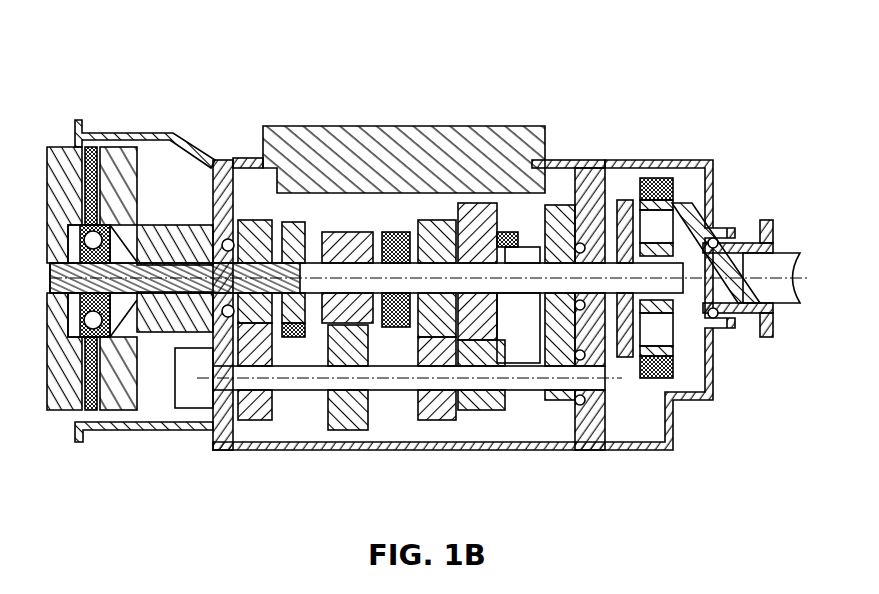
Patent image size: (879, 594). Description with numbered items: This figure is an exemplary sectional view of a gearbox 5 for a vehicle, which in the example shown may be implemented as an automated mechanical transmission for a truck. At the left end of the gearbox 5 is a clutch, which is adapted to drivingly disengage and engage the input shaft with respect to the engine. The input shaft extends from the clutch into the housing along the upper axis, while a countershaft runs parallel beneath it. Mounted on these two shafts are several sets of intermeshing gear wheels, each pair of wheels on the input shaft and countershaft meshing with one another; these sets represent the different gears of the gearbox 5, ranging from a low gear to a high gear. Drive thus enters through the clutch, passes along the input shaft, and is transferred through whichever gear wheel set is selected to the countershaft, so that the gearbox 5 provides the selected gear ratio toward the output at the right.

The gearbox 5 is at (606, 115).